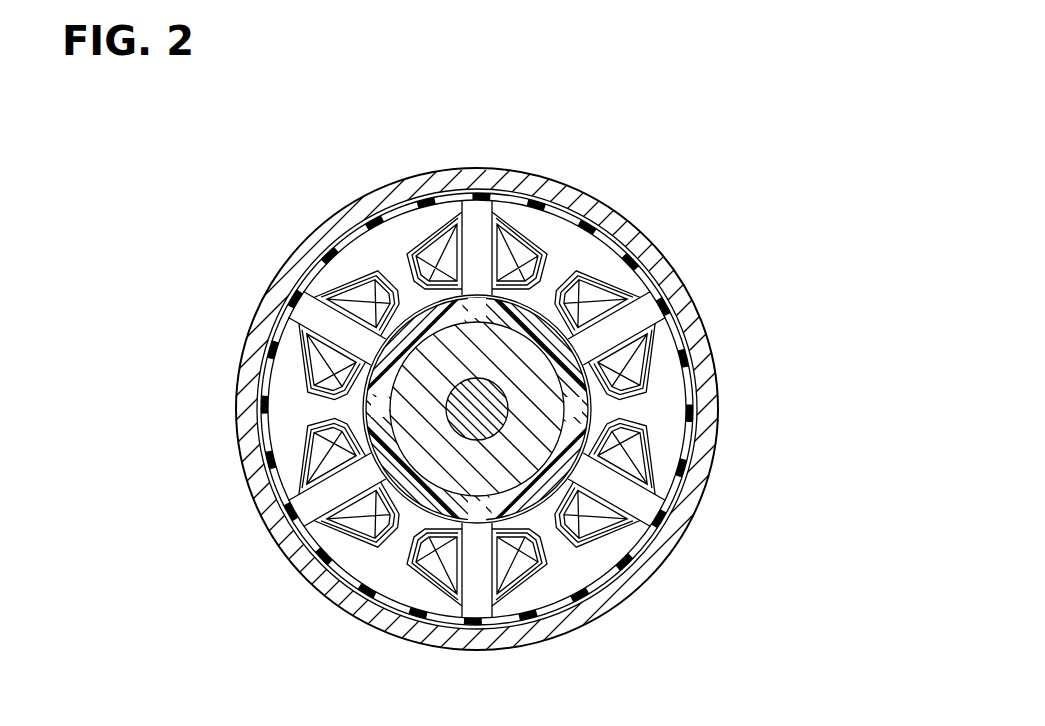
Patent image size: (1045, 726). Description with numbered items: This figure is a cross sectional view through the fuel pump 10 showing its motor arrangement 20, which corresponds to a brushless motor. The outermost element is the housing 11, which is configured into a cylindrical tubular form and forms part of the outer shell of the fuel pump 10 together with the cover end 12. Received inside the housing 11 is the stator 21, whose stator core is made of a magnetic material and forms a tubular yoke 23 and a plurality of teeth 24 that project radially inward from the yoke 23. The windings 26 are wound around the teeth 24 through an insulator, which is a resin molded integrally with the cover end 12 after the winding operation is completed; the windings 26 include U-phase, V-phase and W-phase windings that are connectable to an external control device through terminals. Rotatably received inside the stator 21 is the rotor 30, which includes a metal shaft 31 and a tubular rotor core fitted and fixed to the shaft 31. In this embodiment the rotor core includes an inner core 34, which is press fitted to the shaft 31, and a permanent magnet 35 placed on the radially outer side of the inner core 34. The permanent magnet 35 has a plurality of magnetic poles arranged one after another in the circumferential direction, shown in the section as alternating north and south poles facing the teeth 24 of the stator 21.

The fuel pump 10 is at (648, 146).
The housing 11 is at (705, 410).
The cover end 12 is at (297, 300).
The motor arrangement 20 is at (355, 194).
The stator 21 is at (660, 538).
The yoke 23 is at (443, 210).
The teeth 24 is at (555, 279).
The windings 26 is at (520, 258).
The rotor 30 is at (413, 503).
The shaft 31 is at (338, 556).
The inner core 34 is at (496, 478).
The permanent magnet 35 is at (519, 293).